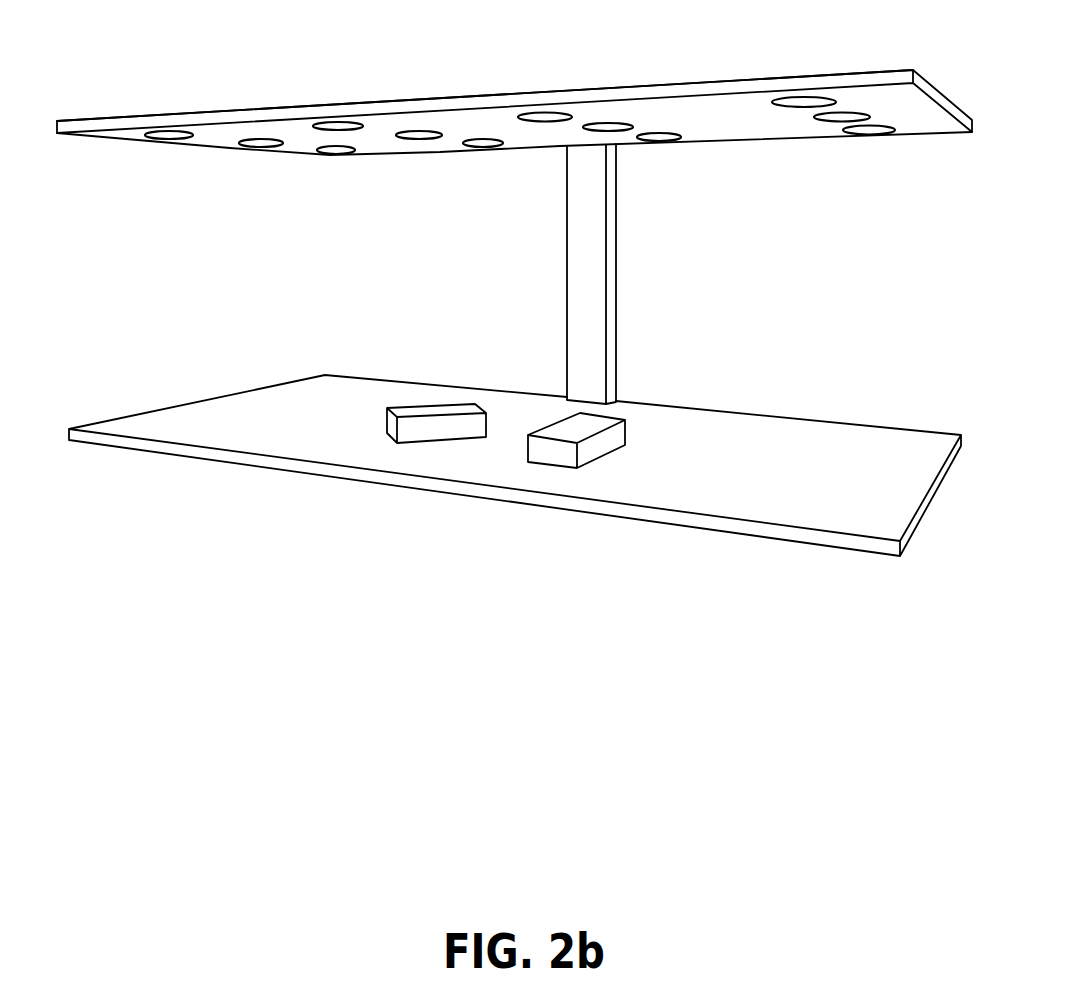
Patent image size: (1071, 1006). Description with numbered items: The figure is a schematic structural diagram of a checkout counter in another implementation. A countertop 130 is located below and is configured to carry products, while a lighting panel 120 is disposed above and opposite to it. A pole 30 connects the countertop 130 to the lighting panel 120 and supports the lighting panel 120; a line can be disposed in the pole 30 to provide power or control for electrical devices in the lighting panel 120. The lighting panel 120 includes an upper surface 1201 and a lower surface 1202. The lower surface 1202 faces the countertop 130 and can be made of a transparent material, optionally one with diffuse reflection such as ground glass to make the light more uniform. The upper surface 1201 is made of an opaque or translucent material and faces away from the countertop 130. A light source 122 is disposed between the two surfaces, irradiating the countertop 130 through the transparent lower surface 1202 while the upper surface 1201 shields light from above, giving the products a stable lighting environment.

The lighting panel 120 is at (514, 120).
The upper surface 1201 is at (455, 97).
The lower surface 1202 is at (727, 139).
The light source 122 is at (419, 139).
The pole 30 is at (612, 337).
The countertop 130 is at (823, 425).